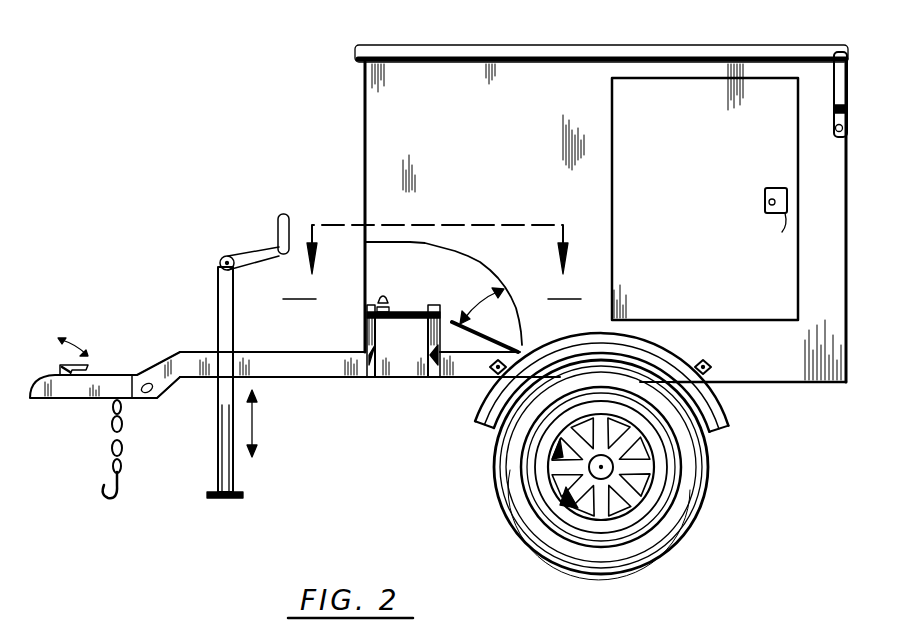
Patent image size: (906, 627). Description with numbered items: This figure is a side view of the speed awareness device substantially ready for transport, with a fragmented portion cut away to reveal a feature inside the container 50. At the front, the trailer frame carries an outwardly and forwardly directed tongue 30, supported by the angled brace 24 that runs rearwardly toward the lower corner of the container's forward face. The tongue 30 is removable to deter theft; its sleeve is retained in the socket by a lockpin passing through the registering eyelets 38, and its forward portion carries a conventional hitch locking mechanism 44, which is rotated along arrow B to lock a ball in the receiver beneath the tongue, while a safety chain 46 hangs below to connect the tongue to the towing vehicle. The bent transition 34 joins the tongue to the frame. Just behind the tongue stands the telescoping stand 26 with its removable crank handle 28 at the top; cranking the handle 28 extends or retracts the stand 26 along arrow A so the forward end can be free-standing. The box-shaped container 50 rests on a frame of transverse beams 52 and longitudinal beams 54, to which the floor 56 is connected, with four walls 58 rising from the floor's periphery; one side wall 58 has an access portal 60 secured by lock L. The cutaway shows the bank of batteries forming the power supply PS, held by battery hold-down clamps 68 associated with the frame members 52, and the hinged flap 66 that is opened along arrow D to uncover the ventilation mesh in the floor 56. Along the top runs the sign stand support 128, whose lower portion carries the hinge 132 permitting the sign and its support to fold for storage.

The angled brace 24 is at (310, 378).
The telescoping stand 26 is at (217, 410).
The crank handle 28 is at (262, 258).
The tongue 30 is at (107, 343).
The angled tongue section 34 is at (165, 360).
The eyelet 38 is at (147, 394).
The hitch locking mechanism 44 is at (62, 366).
The safety chain 46 is at (110, 468).
The container 50 is at (347, 128).
The transverse beam 52 is at (368, 378).
The longitudinal beam 54 is at (463, 366).
The floor 56 is at (470, 397).
The wall 58 is at (492, 150).
The access portal 60 is at (712, 154).
The flap 66 is at (494, 338).
The battery hold-down clamp 68 is at (430, 305).
The sign stand support 128 is at (537, 47).
The hinge 132 is at (845, 52).